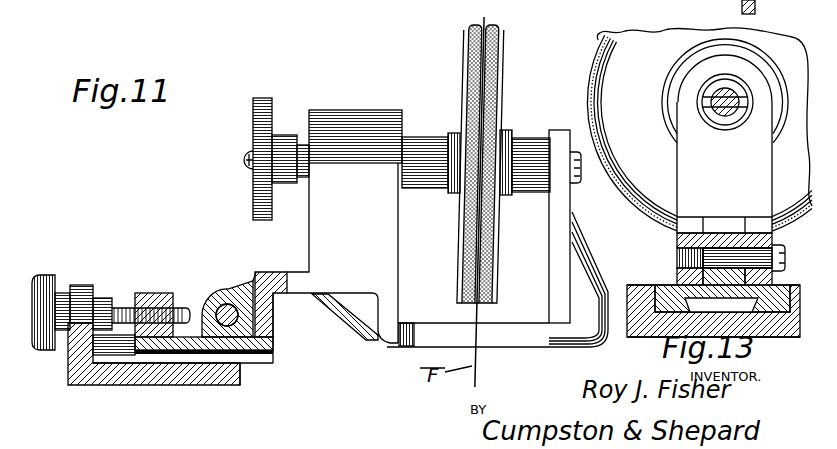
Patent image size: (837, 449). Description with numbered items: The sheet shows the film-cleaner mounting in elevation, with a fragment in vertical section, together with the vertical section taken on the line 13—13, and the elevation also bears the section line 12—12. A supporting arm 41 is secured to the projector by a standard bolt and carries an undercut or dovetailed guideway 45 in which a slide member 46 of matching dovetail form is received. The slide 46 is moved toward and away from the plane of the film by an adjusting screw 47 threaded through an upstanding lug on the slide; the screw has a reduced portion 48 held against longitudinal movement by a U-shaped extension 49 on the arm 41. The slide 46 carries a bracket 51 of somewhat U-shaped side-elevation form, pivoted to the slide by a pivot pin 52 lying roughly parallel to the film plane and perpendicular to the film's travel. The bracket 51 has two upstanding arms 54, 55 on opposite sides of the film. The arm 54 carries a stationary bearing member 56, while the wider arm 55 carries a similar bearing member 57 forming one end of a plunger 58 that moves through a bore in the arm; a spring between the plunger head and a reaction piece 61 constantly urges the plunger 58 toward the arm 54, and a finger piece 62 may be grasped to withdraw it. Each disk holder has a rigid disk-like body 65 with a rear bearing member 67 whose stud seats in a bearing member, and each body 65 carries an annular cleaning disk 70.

In FIG. 11, the section line 12- 12 is at (40, 434).
In FIG. 11, the section line 13 is at (268, 63).
In FIG. 11, the supporting arm 41 is at (180, 388).
In FIG. 13, the supporting arm 41 is at (652, 274).
In FIG. 11, the guideway 45 is at (120, 357).
In FIG. 13, the guideway 45 is at (788, 287).
In FIG. 11, the slide member 46 is at (195, 335).
In FIG. 13, the slide member 46 is at (657, 337).
In FIG. 11, the adjusting screw 47 is at (125, 302).
In FIG. 11, the reduced portion 48 is at (80, 303).
In FIG. 11, the U-shaped extension 49 is at (93, 288).
In FIG. 11, the bracket 51 is at (360, 288).
In FIG. 11, the pivot pin 52 is at (275, 318).
In FIG. 13, the pivot pin 52 is at (727, 252).
In FIG. 11, the upstanding arm 54 is at (575, 213).
In FIG. 11, the upstanding arm 55 is at (348, 118).
In FIG. 13, the upstanding arm 55 is at (677, 97).
In FIG. 11, the stationary bearing member 56 is at (528, 138).
In FIG. 11, the bearing member 57 is at (415, 132).
In FIG. 11, the plunger 58 is at (302, 180).
In FIG. 13, the plunger 58 is at (718, 112).
In FIG. 13, the reaction piece 61 is at (737, 123).
In FIG. 11, the finger piece 62 is at (256, 123).
In FIG. 11, the disk-like body 65 is at (498, 84).
In FIG. 13, the disk-like body 65 is at (642, 43).
In FIG. 11, the bearing member 67 is at (508, 192).
In FIG. 11, the cleaning disk 70 is at (470, 77).
In FIG. 13, the cleaning disk 70 is at (598, 40).